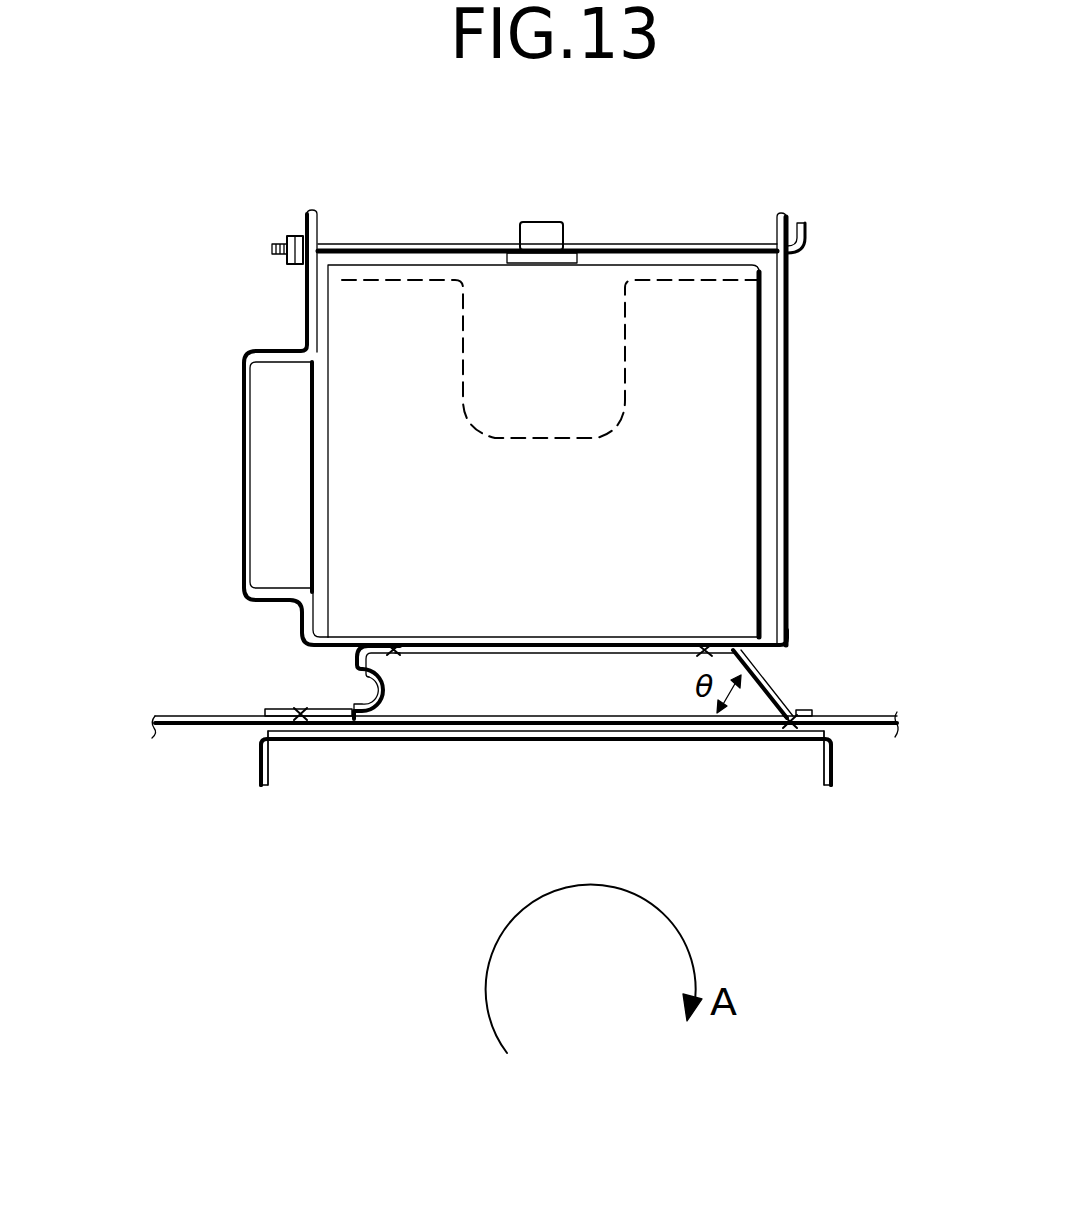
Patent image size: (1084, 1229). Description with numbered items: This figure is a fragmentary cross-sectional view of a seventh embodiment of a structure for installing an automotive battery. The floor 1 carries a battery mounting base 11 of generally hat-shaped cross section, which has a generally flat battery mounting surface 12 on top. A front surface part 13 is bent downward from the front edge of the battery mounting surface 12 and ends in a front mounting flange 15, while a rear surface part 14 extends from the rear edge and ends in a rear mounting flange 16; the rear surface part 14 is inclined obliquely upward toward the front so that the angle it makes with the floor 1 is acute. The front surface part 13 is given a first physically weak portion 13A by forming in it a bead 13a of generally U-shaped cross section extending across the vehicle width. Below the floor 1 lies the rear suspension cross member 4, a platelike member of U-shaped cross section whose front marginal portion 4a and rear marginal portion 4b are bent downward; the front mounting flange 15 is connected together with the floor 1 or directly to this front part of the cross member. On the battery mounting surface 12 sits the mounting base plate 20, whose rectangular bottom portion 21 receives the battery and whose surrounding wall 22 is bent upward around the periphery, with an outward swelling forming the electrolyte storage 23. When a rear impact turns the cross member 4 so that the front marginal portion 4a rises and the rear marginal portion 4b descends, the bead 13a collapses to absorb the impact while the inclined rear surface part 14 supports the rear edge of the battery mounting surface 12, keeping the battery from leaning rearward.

The floor 1 is at (877, 717).
The rear suspension cross member 4 is at (510, 745).
The front marginal portion 4a is at (257, 768).
The rear marginal portion 4b is at (836, 766).
The battery mounting base 11 is at (814, 628).
The battery mounting surface 12 is at (648, 658).
The front surface part 13 is at (352, 672).
The bead 13a is at (358, 690).
The first physically weak portion 13A is at (288, 697).
The rear surface part 14 is at (747, 667).
The front mounting flange 15 is at (340, 712).
The rear mounting flange 16 is at (805, 727).
The mounting base plate 20 is at (822, 347).
The bottom portion 21 is at (560, 635).
The surrounding wall 22 is at (790, 437).
The electrolyte storage 23 is at (243, 394).